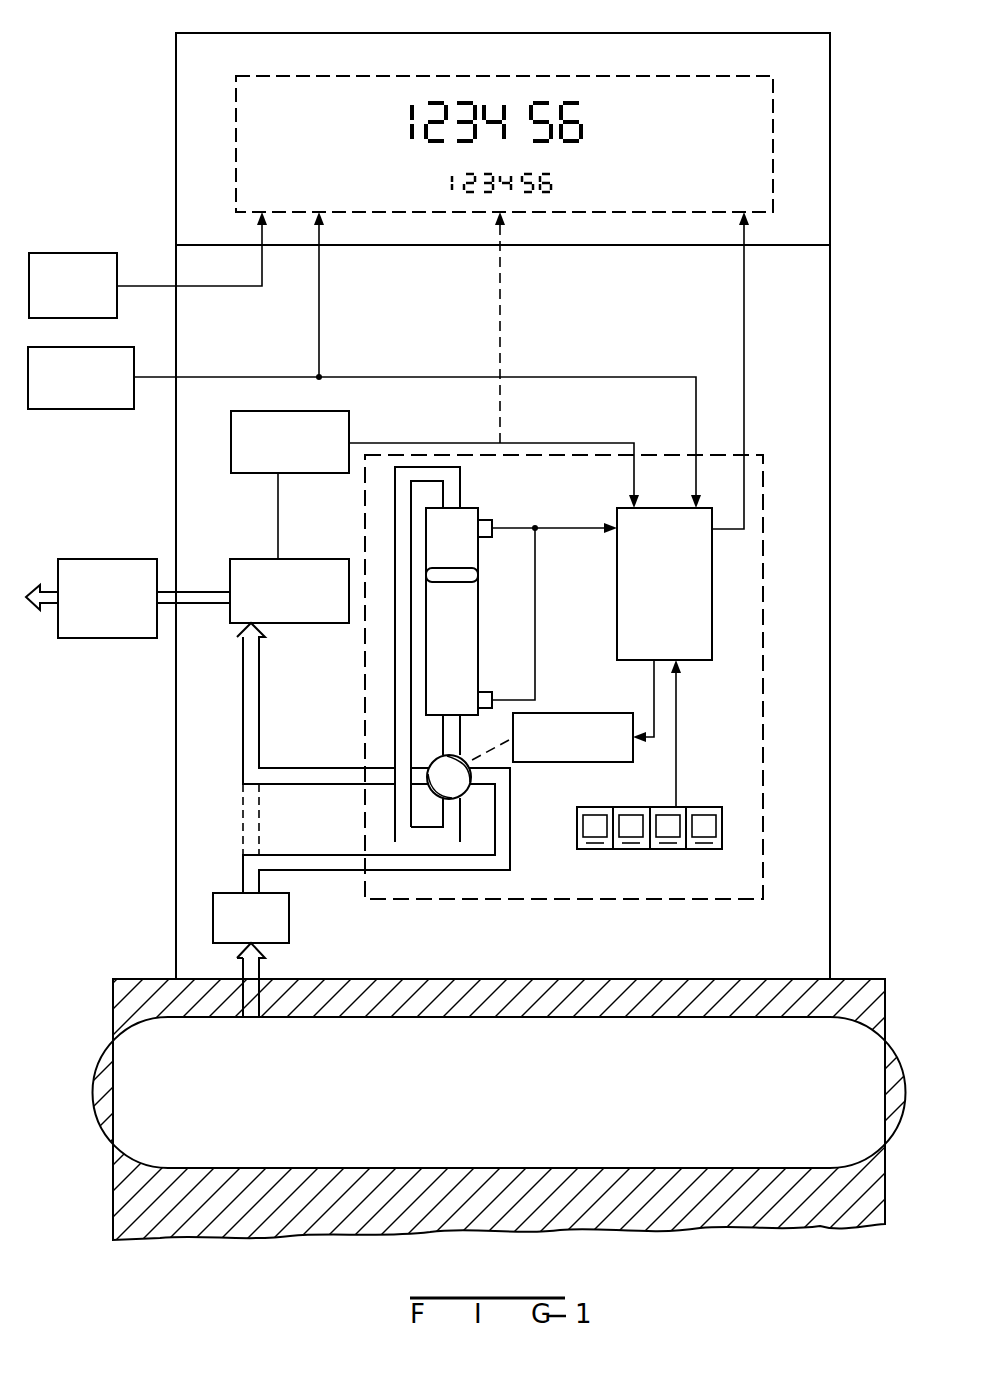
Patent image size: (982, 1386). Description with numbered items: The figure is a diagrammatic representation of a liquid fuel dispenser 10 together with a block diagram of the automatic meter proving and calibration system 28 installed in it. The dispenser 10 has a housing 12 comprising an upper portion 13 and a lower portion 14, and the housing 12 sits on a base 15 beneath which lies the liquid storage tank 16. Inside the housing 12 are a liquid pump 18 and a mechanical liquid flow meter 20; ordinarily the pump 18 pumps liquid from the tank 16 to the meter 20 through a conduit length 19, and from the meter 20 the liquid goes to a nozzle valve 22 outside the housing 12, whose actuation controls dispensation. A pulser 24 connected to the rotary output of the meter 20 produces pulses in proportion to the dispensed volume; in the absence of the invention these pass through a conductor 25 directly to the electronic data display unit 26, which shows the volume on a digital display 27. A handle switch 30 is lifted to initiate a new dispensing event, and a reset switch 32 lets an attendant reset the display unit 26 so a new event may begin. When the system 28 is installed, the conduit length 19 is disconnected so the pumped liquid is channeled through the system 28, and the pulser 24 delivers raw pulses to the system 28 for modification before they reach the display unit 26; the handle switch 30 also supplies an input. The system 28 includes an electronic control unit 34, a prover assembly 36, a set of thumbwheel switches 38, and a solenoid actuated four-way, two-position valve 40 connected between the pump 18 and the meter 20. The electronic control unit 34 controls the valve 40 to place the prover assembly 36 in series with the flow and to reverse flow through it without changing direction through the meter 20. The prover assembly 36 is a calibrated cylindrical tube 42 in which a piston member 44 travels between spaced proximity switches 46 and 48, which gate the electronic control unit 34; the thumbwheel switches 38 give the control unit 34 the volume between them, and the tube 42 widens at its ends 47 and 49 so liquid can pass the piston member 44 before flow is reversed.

The liquid fuel dispenser 10 is at (544, 506).
The housing 12 is at (836, 346).
The upper portion 13 is at (830, 195).
The lower portion 14 is at (830, 285).
The base 15 is at (135, 977).
The liquid storage tank 16 is at (848, 1005).
The liquid pump 18 is at (289, 919).
The conduit length 19 is at (243, 817).
The mechanical liquid flow meter 20 is at (256, 559).
The nozzle valve 22 is at (102, 559).
The pulser 24 is at (349, 412).
The conductor 25 is at (503, 345).
The electronic data display unit 26 is at (504, 106).
The digital display 27 is at (398, 144).
The automatic meter proving and calibration system 28 is at (545, 900).
The handle switch 30 is at (76, 409).
The reset switch 32 is at (80, 253).
The electronic control unit 34 is at (712, 613).
The prover assembly 36 is at (506, 650).
The thumbwheel switches 38 is at (693, 807).
The valve 40 is at (526, 769).
The cylindrical tube 42 is at (478, 641).
The piston member 44 is at (462, 582).
The proximity switch 46 is at (500, 524).
The end of tube 47 is at (484, 511).
The proximity switch 48 is at (482, 692).
The end of tube 49 is at (482, 715).